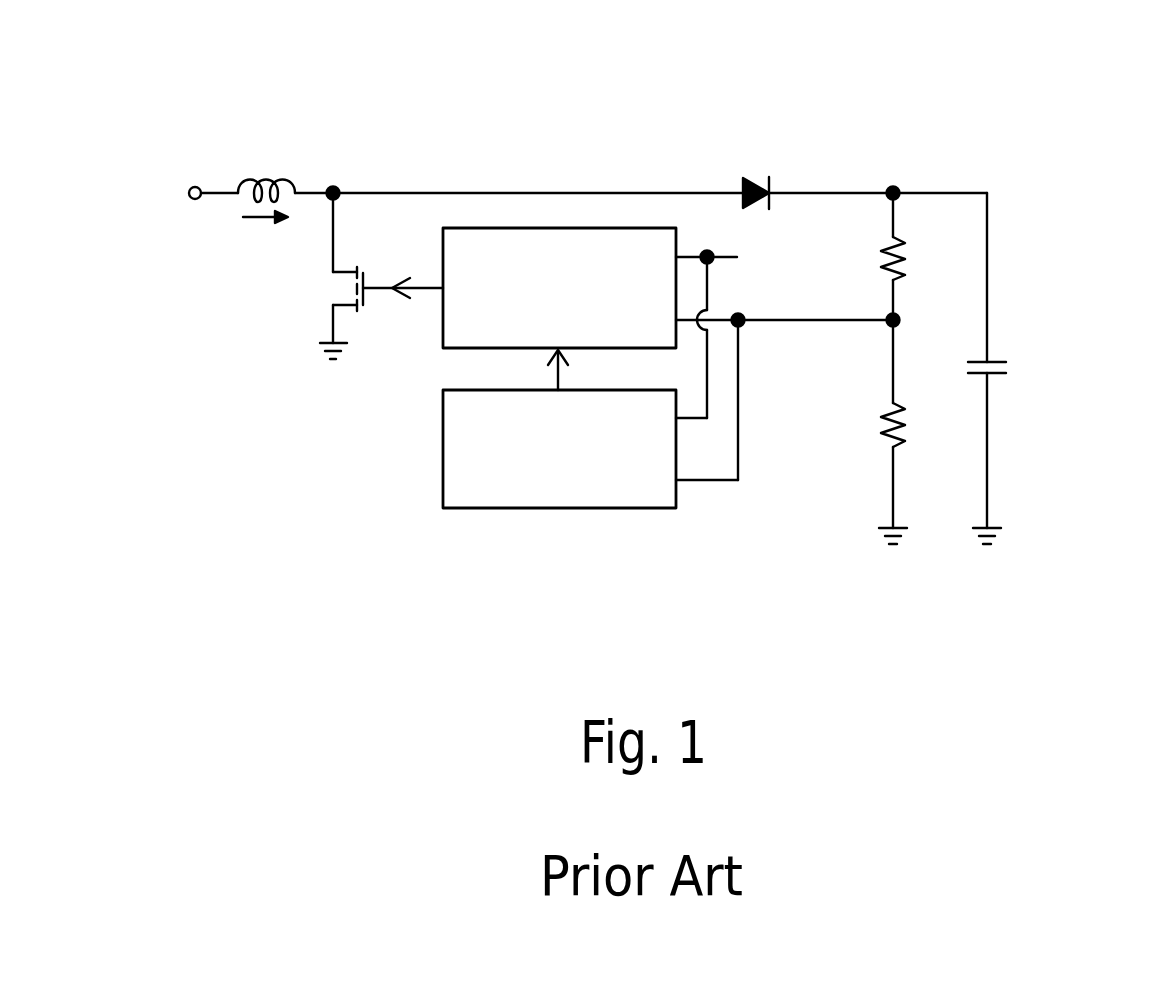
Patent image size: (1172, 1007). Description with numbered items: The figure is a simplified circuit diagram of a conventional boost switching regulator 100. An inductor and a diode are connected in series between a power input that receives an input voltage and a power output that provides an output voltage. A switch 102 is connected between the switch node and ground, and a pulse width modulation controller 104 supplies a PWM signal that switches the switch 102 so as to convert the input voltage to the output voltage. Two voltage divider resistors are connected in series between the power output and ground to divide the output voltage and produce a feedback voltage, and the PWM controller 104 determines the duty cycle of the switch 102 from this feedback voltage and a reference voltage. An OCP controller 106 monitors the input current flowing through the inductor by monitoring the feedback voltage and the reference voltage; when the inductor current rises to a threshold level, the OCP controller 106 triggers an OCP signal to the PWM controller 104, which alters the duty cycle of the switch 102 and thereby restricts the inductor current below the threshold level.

The boost switching regulator 100 is at (640, 340).
The switch 102 is at (322, 294).
The PWM controller 104 is at (558, 228).
The OCP controller 106 is at (557, 508).